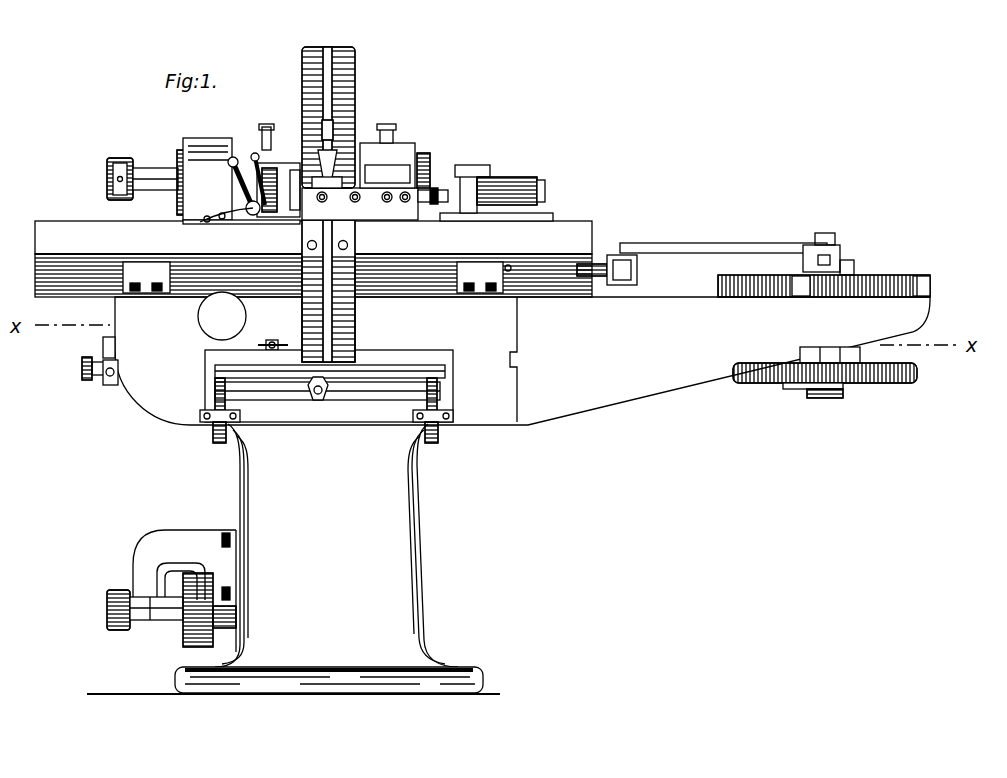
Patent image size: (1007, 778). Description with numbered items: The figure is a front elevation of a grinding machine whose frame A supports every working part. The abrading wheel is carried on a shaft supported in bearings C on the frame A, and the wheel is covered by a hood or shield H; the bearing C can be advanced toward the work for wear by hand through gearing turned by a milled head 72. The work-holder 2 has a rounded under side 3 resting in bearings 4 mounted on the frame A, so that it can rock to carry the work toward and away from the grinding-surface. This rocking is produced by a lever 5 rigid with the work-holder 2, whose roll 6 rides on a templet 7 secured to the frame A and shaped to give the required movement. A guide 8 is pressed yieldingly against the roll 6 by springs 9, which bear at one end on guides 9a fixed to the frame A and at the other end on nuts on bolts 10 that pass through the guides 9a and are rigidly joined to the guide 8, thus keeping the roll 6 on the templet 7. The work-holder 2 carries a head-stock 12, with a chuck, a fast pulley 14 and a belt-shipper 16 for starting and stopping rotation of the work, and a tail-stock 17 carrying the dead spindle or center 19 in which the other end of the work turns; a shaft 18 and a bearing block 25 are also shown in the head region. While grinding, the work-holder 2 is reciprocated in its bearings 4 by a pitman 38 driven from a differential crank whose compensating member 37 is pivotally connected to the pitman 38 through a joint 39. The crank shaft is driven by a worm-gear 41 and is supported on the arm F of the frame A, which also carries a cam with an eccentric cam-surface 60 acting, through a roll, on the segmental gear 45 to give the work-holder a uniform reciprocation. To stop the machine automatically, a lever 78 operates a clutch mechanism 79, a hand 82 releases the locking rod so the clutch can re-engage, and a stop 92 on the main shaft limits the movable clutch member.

The work-holder 2 is at (60, 228).
The rounded under side of work-holder 3 is at (78, 285).
The bearings 4 is at (150, 280).
The lever 5 is at (345, 328).
The roll 6 is at (318, 400).
The templet 7 is at (382, 402).
The guide 8 is at (365, 372).
The springs 9 is at (221, 443).
The guides 9a is at (215, 392).
The bolts 10 is at (215, 367).
The head-stock 12 is at (203, 181).
The fast pulley 14 is at (267, 175).
The belt-shipper 16 is at (250, 156).
The tail-stock 17 is at (492, 187).
The shaft 18 is at (466, 214).
The dead spindle or center 19 is at (437, 190).
The bearing block 25 is at (388, 222).
The compensating member 37 is at (838, 262).
The pitman 38 is at (716, 246).
The pivot joint 39 is at (619, 258).
The worm-gear 41 is at (885, 378).
The segmental gear 45 is at (856, 278).
The eccentric cam-surface 60 is at (830, 290).
The milled head 72 is at (222, 316).
The lever 78 is at (103, 342).
The clutch mechanism 79 is at (110, 386).
The hand 82 is at (272, 341).
The stop 92 is at (80, 368).
The frame A is at (416, 505).
The bearings C is at (405, 150).
The arm of frame F is at (642, 392).
The hood or shield H is at (342, 72).